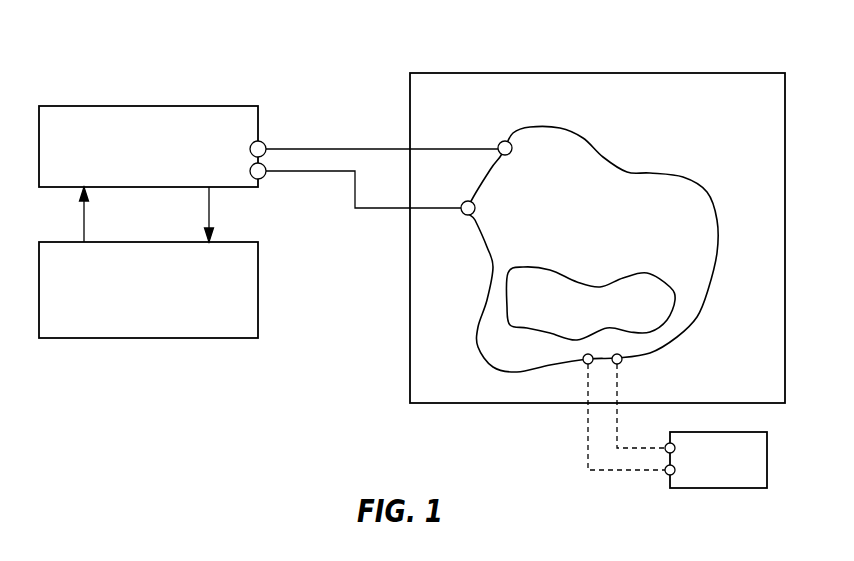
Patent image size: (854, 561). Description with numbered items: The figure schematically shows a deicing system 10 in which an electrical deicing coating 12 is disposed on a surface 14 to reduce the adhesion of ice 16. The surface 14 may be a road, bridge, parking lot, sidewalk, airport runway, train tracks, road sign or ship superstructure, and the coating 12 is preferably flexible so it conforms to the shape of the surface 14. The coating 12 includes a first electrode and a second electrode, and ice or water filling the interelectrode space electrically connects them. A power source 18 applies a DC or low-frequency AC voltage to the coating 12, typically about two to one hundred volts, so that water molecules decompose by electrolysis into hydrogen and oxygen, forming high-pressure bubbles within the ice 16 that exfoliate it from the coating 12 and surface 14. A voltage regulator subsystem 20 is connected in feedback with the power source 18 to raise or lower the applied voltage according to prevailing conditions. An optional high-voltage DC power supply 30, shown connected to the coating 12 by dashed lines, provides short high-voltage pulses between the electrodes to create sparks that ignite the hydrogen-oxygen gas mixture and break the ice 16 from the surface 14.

The system 10 is at (247, 34).
The electrical deicing coating 12 is at (622, 241).
The surface 14 is at (490, 110).
The ice 16 is at (588, 319).
The power source 18 is at (160, 171).
The voltage regulator subsystem 20 is at (160, 323).
The high-voltage DC power supply 30 is at (753, 482).